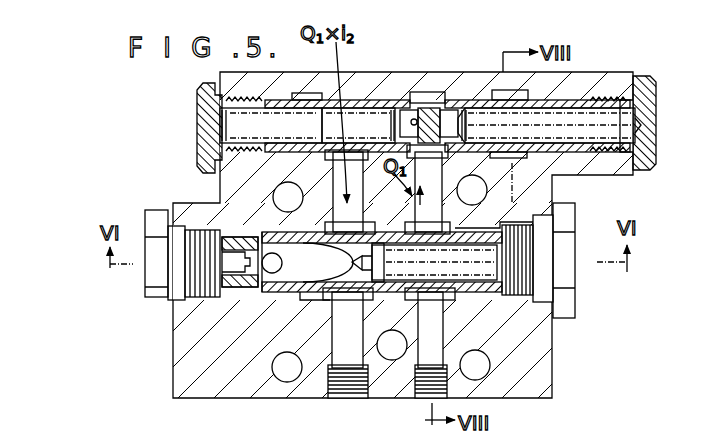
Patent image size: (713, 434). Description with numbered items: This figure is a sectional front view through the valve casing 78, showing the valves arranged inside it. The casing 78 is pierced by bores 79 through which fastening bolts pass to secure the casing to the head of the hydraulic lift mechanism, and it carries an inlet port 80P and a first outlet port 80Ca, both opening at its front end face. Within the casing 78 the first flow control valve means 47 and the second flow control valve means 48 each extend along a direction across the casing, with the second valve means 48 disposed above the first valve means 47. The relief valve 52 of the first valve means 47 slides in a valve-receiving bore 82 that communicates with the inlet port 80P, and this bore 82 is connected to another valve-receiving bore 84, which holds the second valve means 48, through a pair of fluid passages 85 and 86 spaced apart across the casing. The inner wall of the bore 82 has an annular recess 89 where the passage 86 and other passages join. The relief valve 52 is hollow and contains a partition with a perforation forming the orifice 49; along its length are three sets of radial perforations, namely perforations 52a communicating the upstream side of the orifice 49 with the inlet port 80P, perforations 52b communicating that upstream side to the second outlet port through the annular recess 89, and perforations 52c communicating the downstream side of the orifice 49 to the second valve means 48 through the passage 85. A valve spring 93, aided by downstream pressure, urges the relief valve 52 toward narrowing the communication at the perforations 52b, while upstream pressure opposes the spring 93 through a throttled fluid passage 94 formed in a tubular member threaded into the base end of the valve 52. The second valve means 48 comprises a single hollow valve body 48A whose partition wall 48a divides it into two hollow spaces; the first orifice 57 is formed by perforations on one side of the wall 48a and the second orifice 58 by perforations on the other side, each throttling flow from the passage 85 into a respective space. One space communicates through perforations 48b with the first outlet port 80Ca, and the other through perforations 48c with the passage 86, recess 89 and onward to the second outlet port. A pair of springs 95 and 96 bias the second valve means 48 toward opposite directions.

The spring 96 is at (228, 120).
The perforations 48c is at (345, 124).
The hollow valve body 48A is at (370, 100).
The partition wall 48a is at (424, 100).
The second flow control valve means 48 is at (520, 88).
The first outlet port 80Ca is at (507, 72).
The spring 95 is at (645, 100).
The second orifice 58 is at (398, 128).
The perforations 48b is at (533, 122).
The fluid passage 86 is at (336, 186).
The throttled fluid passage 94 is at (220, 232).
The radial perforations 52a is at (270, 250).
The valve-receiving bore 82 is at (375, 226).
The first orifice 57 is at (455, 192).
The valve-receiving bore 84 is at (512, 192).
The fluid passage 85 is at (460, 228).
The radial perforations 52b is at (290, 250).
The orifice 49 is at (378, 262).
The radial perforations 52c is at (430, 287).
The inlet port 80P is at (285, 302).
The first flow control valve means 47 is at (318, 292).
The annular recess 89 is at (350, 300).
The relief valve 52 is at (402, 291).
The valve spring 93 is at (483, 293).
The valve casing 78 is at (541, 371).
The bores 79 is at (289, 380).